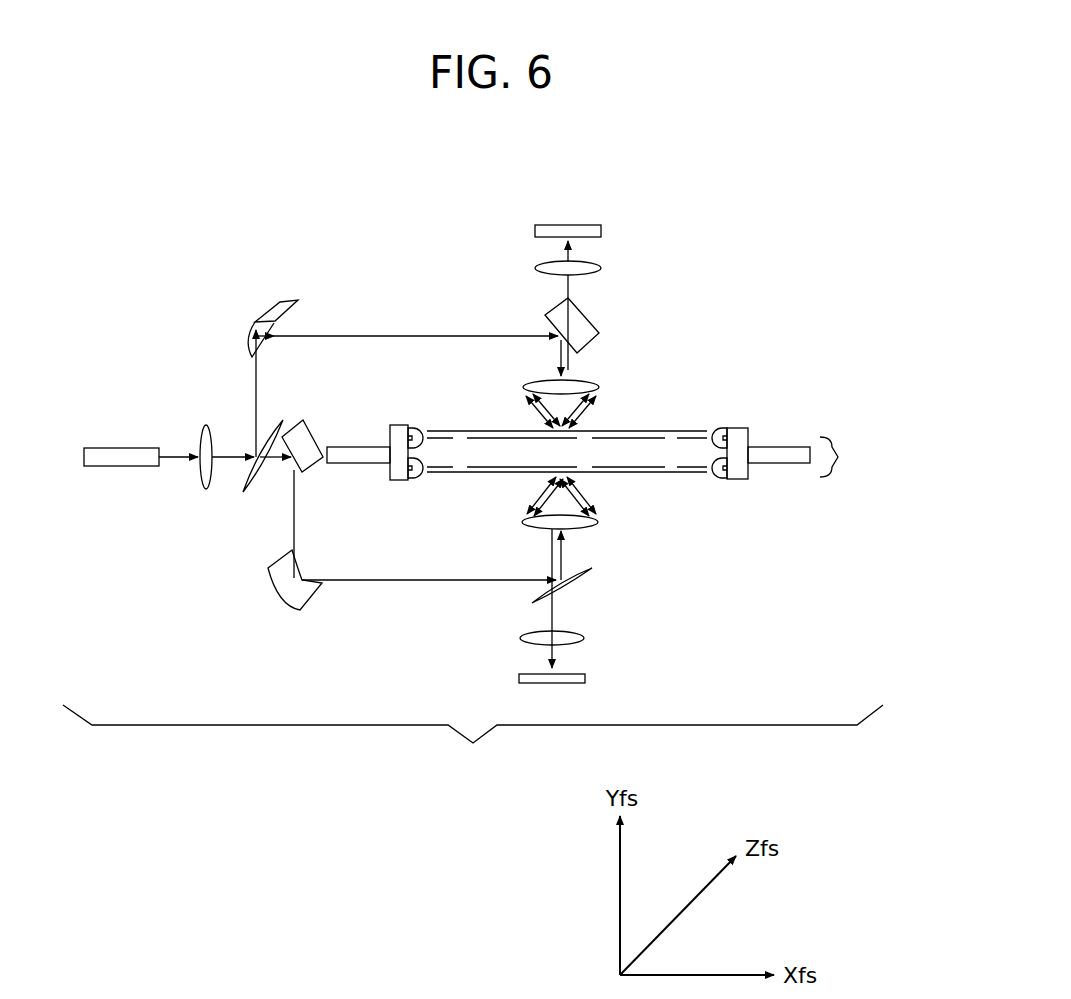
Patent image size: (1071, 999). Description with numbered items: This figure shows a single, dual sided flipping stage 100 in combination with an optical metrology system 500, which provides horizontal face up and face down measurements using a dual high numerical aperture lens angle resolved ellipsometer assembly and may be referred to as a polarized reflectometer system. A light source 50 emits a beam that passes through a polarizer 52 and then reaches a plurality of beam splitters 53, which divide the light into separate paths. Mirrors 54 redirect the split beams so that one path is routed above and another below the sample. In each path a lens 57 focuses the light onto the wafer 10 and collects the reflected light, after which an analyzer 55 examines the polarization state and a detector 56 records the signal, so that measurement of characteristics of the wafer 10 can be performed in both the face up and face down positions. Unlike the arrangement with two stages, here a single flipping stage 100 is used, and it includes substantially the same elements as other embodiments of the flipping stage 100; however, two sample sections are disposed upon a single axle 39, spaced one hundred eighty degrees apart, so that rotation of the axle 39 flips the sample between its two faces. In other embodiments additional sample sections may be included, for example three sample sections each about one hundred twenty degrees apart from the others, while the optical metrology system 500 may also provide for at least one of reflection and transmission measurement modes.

The light source 50 is at (102, 448).
The polarizer 52 is at (202, 435).
The beam splitter 53 is at (260, 440).
The mirror 54 is at (280, 302).
The analyzer 55 is at (600, 267).
The detector 56 is at (601, 225).
The lens 57 is at (582, 386).
The wafer 10 is at (645, 467).
The axle 39 is at (778, 453).
The flipping stage 100 is at (851, 457).
The optical metrology system 500 is at (473, 758).